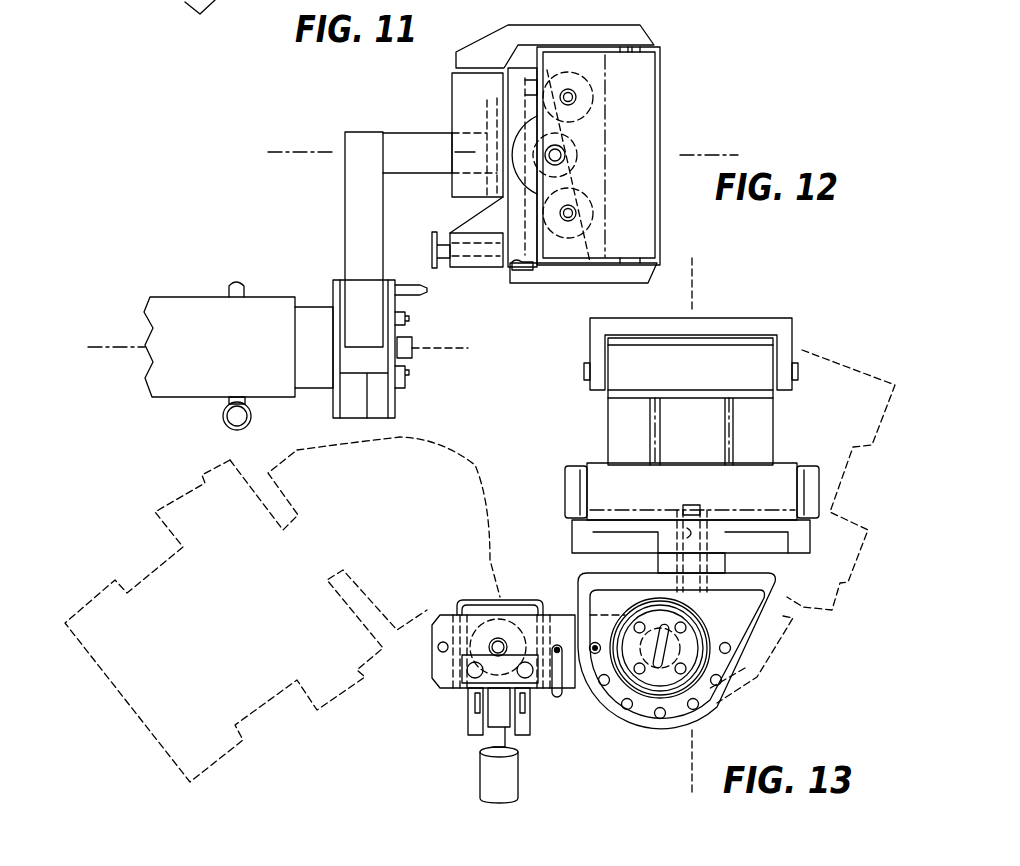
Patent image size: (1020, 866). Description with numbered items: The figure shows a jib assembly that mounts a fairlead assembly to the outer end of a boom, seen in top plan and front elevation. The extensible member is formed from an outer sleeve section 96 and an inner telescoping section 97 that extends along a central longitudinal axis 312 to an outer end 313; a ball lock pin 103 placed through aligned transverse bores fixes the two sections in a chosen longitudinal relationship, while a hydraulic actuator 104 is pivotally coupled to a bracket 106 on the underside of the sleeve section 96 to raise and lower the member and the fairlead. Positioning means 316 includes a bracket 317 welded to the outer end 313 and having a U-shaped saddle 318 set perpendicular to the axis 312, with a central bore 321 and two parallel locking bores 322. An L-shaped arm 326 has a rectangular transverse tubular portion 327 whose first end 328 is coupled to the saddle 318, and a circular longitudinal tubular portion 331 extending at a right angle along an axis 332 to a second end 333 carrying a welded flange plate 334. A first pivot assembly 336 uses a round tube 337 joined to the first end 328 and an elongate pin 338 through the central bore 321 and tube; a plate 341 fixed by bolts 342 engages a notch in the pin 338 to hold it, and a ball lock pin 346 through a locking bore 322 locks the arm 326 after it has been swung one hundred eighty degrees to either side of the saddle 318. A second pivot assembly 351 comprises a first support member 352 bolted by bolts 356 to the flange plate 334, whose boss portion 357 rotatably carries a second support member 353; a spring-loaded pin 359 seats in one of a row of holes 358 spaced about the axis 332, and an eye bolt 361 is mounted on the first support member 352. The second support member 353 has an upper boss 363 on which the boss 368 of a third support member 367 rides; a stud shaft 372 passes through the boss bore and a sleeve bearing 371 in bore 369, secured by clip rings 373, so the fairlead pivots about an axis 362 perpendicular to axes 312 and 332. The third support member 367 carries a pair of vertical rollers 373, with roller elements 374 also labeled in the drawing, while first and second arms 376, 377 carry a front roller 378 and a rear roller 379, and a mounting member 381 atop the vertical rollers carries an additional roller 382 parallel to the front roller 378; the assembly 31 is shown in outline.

In FIG. 12, the material handling assembly 31 is at (797, 313).
In FIG. 12, the outer sleeve section 96 is at (178, 297).
In FIG. 12, the inner telescoping section 97 is at (316, 305).
In FIG. 12, the ball lock pin 103 is at (224, 422).
In FIG. 13, the hydraulic actuator 104 is at (480, 774).
In FIG. 13, the bracket 106 is at (476, 735).
In FIG. 12, the central longitudinal axis 312 is at (120, 348).
In FIG. 12, the outer end 313 is at (263, 390).
In FIG. 12, the positioning means 316 is at (438, 295).
In FIG. 13, the positioning means 316 is at (398, 702).
In FIG. 12, the bracket 317 is at (311, 394).
In FIG. 12, the U-shaped saddle 318 is at (398, 412).
In FIG. 13, the U-shaped saddle 318 is at (443, 610).
In FIG. 12, the central bore 321 is at (330, 338).
In FIG. 13, the locking bores 322 is at (430, 658).
In FIG. 12, the L-shaped support arm 326 is at (344, 133).
In FIG. 12, the transverse tubular portion 327 is at (345, 198).
In FIG. 12, the first end 328 is at (367, 307).
In FIG. 12, the longitudinal tubular portion 331 is at (405, 174).
In FIG. 13, the longitudinal tubular portion 331 is at (576, 685).
In FIG. 12, the axis 332 is at (276, 151).
In FIG. 12, the second end 333 is at (472, 142).
In FIG. 12, the flange plate 334 is at (490, 133).
In FIG. 12, the first pivot assembly 336 is at (411, 366).
In FIG. 12, the round tube 337 is at (377, 440).
In FIG. 12, the elongate pin 338 is at (415, 348).
In FIG. 13, the elongate pin 338 is at (498, 638).
In FIG. 12, the plate 341 is at (396, 390).
In FIG. 13, the plate 341 is at (478, 636).
In FIG. 12, the bolts 342 is at (407, 324).
In FIG. 13, the bolts 342 is at (466, 690).
In FIG. 12, the ball lock pin 346 is at (432, 268).
In FIG. 13, the ball lock pin 346 is at (558, 698).
In FIG. 13, the second pivot assembly 351 is at (627, 740).
In FIG. 12, the first support member 352 is at (500, 270).
In FIG. 12, the second support member 353 is at (527, 68).
In FIG. 13, the second support member 353 is at (757, 645).
In FIG. 13, the bolts 356 is at (717, 704).
In FIG. 13, the boss portion 357 is at (675, 722).
In FIG. 12, the holes 358 is at (537, 270).
In FIG. 13, the holes 358 is at (618, 708).
In FIG. 12, the spring-loaded pin 359 is at (440, 230).
In FIG. 13, the spring-loaded pin 359 is at (578, 615).
In FIG. 13, the eye bolt 361 is at (745, 678).
In FIG. 13, the axis 362 is at (690, 765).
In FIG. 12, the boss 363 is at (480, 162).
In FIG. 13, the boss 363 is at (787, 600).
In FIG. 13, the third support member 367 is at (572, 532).
In FIG. 13, the boss 368 is at (690, 543).
In FIG. 13, the bore 369 is at (687, 535).
In FIG. 13, the sleeve bearing 371 is at (708, 536).
In FIG. 12, the stud shaft 372 is at (572, 163).
In FIG. 13, the stud shaft 372 is at (692, 508).
In FIG. 12, the vertical rollers 373 is at (570, 147).
In FIG. 13, the vertical rollers 373 is at (676, 510).
In FIG. 12, the rollers 374 is at (597, 97).
In FIG. 13, the rollers 374 is at (608, 432).
In FIG. 12, the first arm 376 is at (608, 25).
In FIG. 13, the first arm 376 is at (820, 478).
In FIG. 12, the second arm 377 is at (645, 283).
In FIG. 13, the second arm 377 is at (565, 480).
In FIG. 13, the front roller 378 is at (708, 465).
In FIG. 12, the rear roller 379 is at (490, 113).
In FIG. 12, the mounting member 381 is at (654, 70).
In FIG. 13, the mounting member 381 is at (730, 318).
In FIG. 12, the additional roller 382 is at (665, 222).
In FIG. 13, the additional roller 382 is at (668, 400).